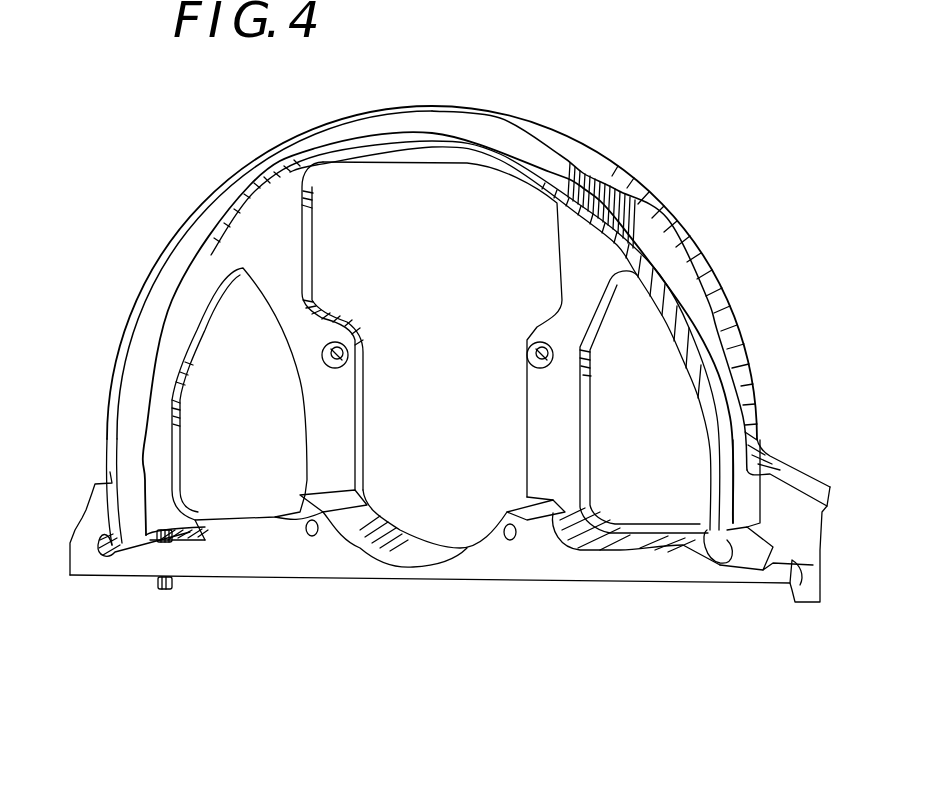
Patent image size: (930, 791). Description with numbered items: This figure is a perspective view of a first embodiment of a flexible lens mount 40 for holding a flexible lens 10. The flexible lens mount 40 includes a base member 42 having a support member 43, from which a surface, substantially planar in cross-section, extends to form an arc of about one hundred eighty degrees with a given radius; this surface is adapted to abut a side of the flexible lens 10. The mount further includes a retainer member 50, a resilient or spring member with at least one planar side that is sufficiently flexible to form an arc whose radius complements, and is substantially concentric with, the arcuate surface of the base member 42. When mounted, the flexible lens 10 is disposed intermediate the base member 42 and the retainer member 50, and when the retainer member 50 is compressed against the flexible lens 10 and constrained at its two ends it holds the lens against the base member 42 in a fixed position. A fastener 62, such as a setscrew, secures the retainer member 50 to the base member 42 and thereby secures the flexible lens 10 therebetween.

The flexible lens 10 is at (110, 390).
The flexible lens mount 40 is at (725, 227).
The base member 42 is at (705, 316).
The support member 43 is at (196, 332).
The retainer member 50 is at (145, 452).
The fastener 62 is at (162, 590).